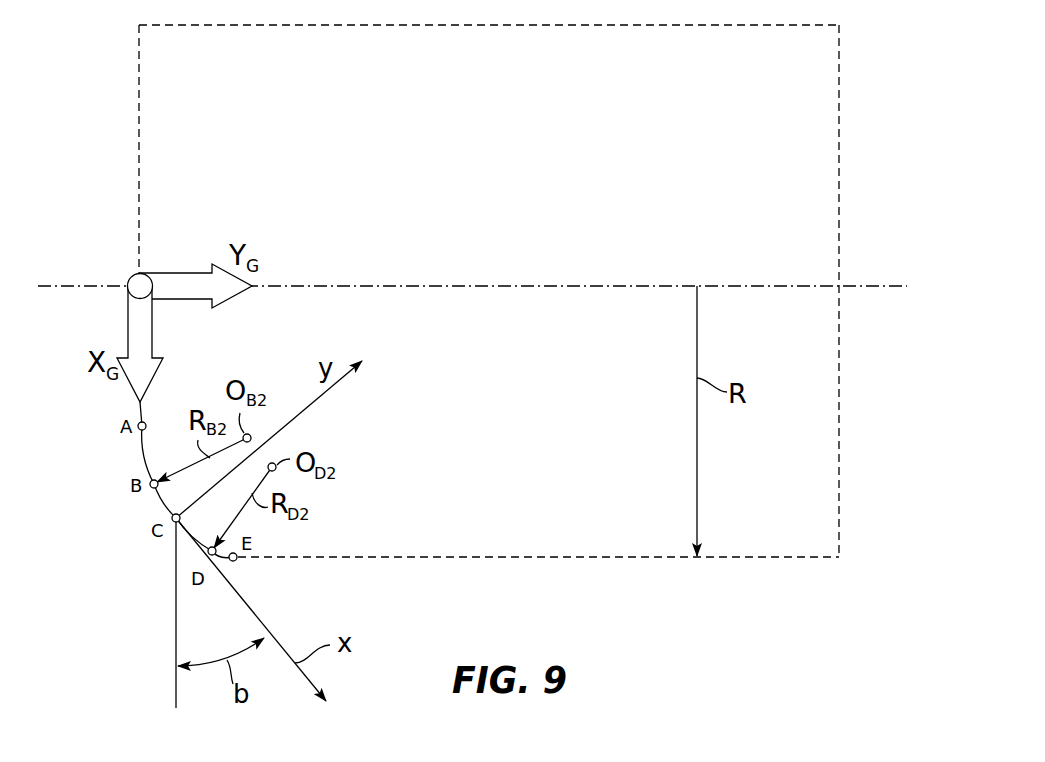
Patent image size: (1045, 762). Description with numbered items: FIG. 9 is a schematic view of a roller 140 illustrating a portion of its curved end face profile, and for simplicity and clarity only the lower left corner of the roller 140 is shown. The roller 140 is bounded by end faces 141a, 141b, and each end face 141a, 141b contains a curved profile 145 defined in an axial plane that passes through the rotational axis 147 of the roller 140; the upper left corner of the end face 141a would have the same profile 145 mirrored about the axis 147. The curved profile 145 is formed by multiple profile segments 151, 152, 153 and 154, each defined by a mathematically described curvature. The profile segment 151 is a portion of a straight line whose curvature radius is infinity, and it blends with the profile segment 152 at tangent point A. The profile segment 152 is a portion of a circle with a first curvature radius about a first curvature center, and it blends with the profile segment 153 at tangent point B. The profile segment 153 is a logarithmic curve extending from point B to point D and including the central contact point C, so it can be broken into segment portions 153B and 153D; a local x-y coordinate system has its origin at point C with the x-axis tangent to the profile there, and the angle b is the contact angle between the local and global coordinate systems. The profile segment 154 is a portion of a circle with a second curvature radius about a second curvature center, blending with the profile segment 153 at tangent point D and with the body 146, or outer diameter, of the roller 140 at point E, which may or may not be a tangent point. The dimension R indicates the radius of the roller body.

The roller 140 is at (486, 307).
The end face 141a is at (138, 178).
The end face 141b is at (840, 97).
The curved profile 145 is at (102, 513).
The body 146 is at (627, 557).
The rotational axis 147 is at (70, 283).
The profile segment 151 is at (138, 402).
The profile segment 152 is at (135, 445).
The profile segment 153 is at (160, 514).
The segment portion 153B is at (162, 502).
The segment portion 153D is at (182, 545).
The profile segment 154 is at (223, 562).